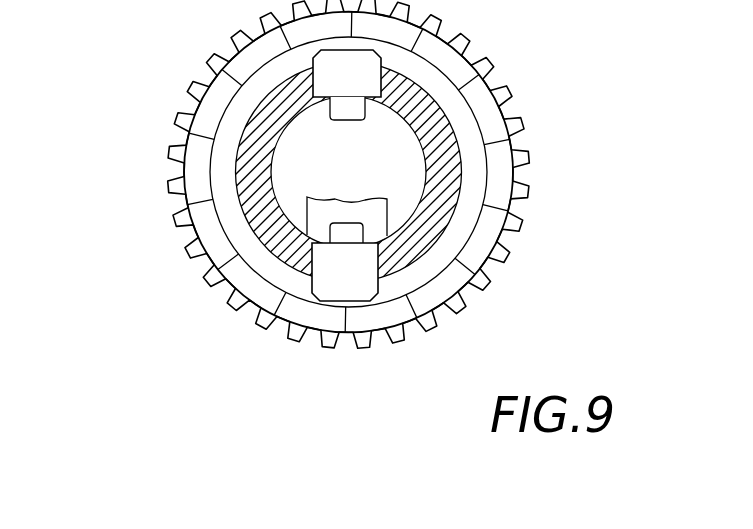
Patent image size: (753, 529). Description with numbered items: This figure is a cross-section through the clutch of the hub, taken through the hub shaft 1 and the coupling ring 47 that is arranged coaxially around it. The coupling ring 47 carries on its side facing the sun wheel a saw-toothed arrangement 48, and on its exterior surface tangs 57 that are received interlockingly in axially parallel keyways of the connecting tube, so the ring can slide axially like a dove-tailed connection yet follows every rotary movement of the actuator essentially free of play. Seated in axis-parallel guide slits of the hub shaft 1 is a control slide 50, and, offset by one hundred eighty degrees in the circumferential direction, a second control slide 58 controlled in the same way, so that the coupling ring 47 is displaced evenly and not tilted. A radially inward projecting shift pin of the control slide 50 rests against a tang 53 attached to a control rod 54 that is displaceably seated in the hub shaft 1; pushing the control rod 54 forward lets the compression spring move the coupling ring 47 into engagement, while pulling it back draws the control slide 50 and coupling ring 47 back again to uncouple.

The hub shaft 1 is at (255, 145).
The coupling ring 47 is at (458, 240).
The saw-toothed arrangement 48 is at (502, 188).
The control slide 50 is at (338, 278).
The tang 53 is at (350, 233).
The control rod 54 is at (322, 215).
The tangs 57 is at (507, 93).
The second control slide 58 is at (342, 70).